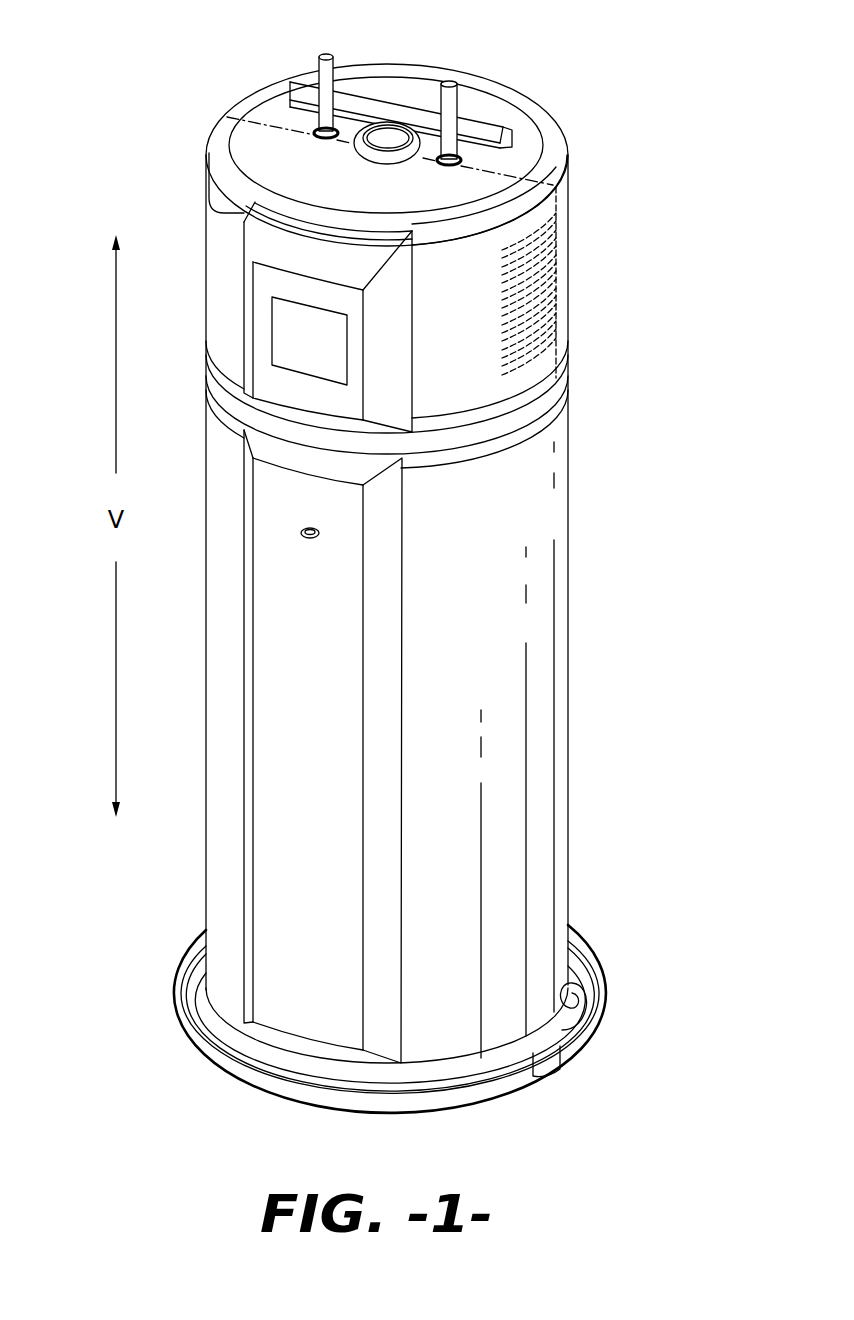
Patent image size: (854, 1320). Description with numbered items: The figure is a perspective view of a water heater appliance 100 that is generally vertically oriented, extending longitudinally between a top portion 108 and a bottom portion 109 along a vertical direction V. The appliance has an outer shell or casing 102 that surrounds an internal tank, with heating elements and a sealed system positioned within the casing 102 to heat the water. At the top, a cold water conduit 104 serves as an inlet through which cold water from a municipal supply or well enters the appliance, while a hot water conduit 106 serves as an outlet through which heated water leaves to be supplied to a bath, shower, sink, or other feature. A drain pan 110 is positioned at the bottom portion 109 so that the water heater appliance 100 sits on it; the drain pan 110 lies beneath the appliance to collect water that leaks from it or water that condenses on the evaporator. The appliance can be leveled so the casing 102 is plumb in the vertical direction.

The water heater appliance 100 is at (602, 117).
The casing 102 is at (538, 518).
The cold water conduit 104 is at (458, 98).
The hot water conduit 106 is at (322, 68).
The top portion 108 is at (188, 142).
The bottom portion 109 is at (158, 971).
The drain pan 110 is at (620, 985).